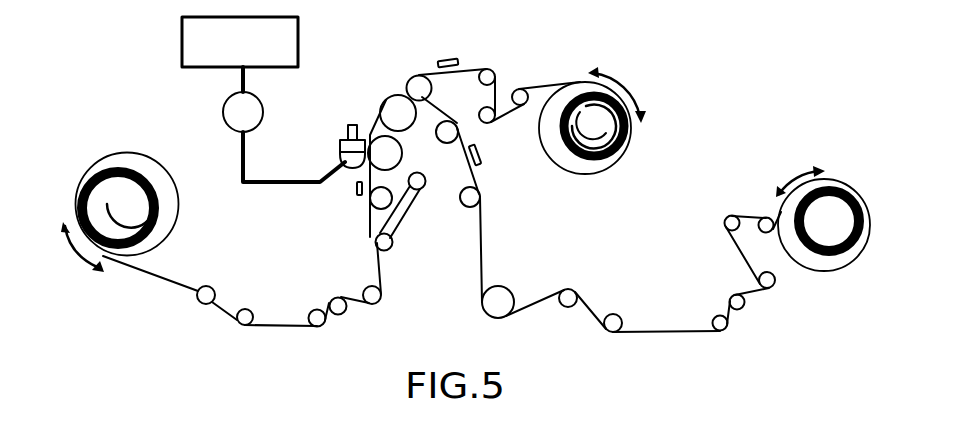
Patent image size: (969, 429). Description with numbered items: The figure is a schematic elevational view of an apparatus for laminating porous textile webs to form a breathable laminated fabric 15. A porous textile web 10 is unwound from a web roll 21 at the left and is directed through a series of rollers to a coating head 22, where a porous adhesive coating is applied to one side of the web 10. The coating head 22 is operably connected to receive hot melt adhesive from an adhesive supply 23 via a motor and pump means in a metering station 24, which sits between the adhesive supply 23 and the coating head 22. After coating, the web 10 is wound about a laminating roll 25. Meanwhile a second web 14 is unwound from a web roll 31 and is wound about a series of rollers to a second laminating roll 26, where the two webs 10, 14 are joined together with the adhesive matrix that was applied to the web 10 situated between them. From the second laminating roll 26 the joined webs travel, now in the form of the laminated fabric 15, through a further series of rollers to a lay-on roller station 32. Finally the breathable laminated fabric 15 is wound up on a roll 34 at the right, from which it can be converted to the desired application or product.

The porous textile web 10 is at (284, 331).
The web 14 is at (549, 78).
The breathable laminated fabric 15 is at (491, 243).
The web roll 21 is at (170, 144).
The coating head 22 is at (344, 183).
The adhesive supply 23 is at (298, 19).
The metering station 24 is at (270, 112).
The laminating roll 25 is at (386, 100).
The second laminating roll 26 is at (418, 76).
The web roll 31 is at (567, 153).
The lay-on roller station 32 is at (753, 210).
The roll 34 is at (833, 182).